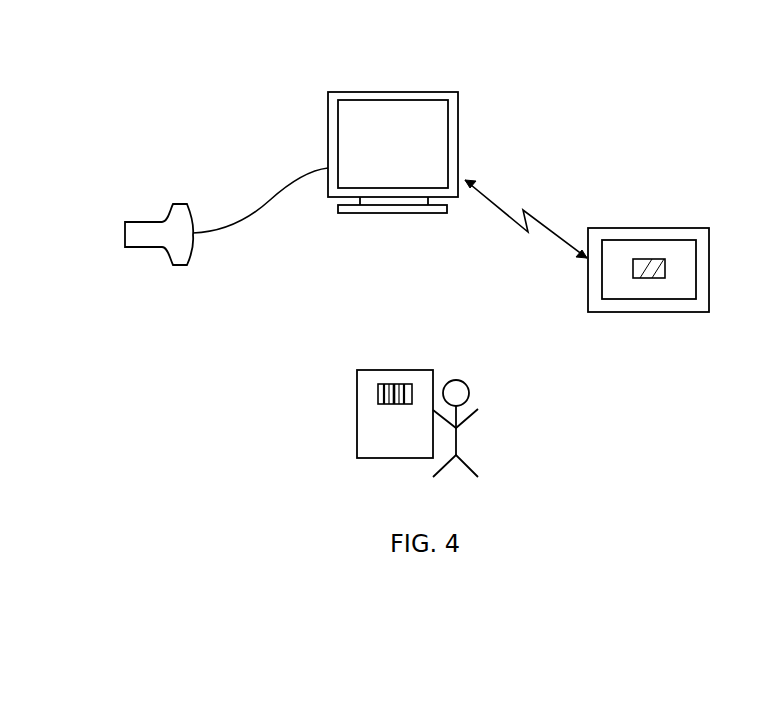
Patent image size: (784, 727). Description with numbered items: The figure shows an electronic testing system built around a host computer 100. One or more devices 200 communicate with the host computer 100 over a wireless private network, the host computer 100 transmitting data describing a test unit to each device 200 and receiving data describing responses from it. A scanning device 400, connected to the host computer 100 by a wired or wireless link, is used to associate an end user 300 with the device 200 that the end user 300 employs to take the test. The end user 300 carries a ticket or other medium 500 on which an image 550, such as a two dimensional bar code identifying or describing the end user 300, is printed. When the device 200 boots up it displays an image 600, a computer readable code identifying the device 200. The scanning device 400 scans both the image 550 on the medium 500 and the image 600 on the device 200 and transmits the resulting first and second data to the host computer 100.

The host computer 100 is at (435, 92).
The device 200 is at (682, 312).
The end user 300 is at (458, 455).
The scanning device 400 is at (143, 222).
The medium 500 is at (357, 410).
The image 550 is at (385, 384).
The image 600 is at (654, 259).